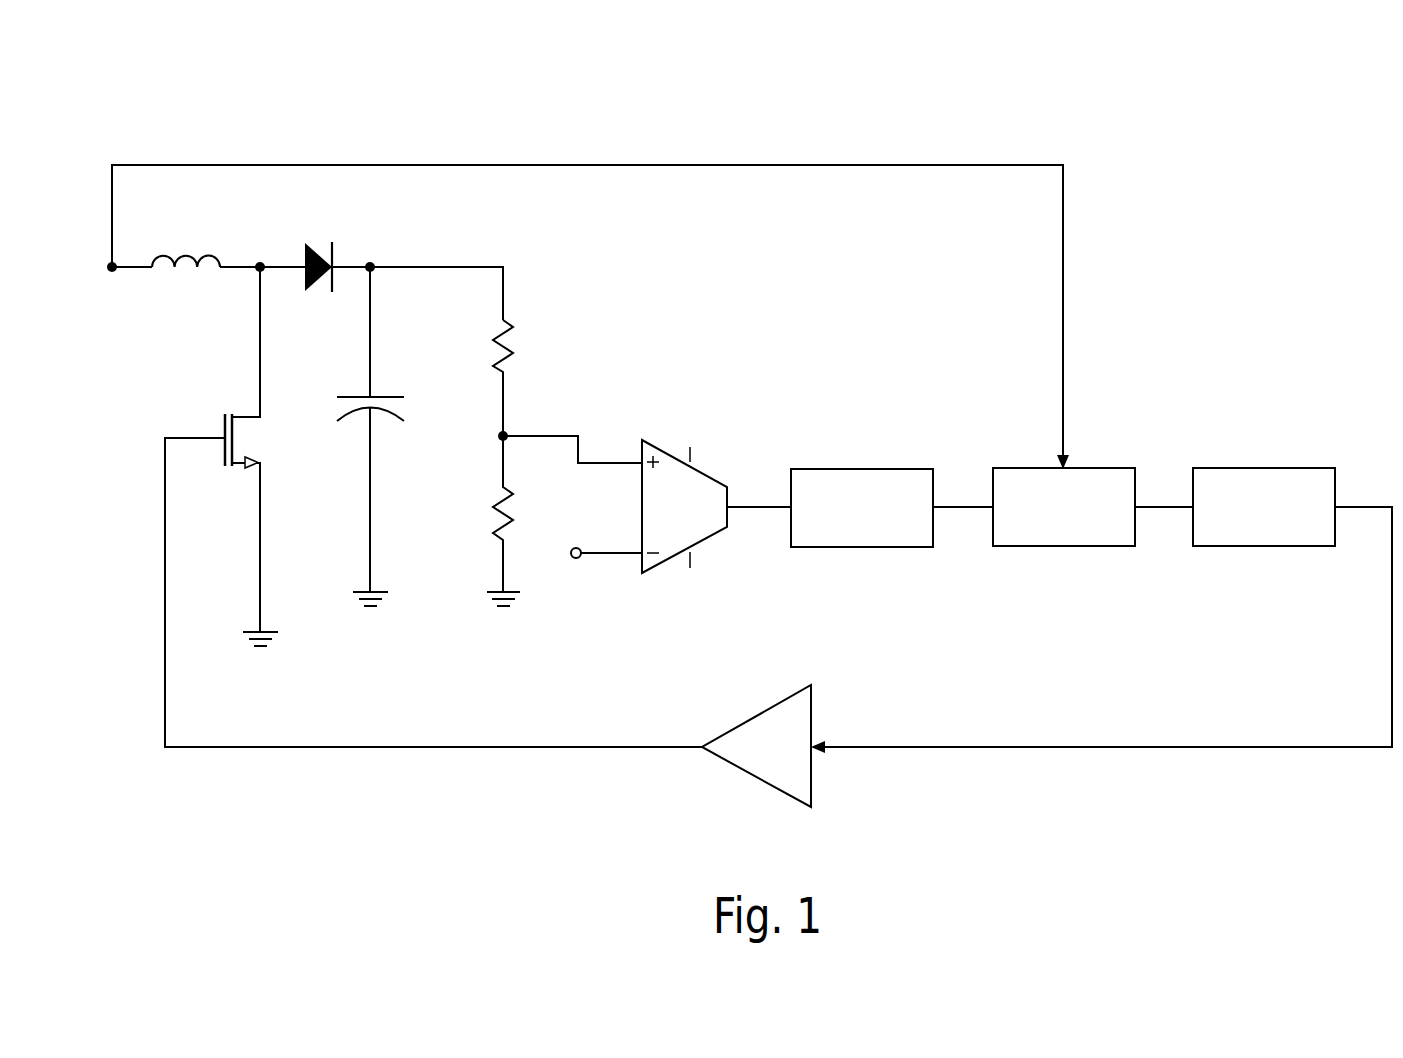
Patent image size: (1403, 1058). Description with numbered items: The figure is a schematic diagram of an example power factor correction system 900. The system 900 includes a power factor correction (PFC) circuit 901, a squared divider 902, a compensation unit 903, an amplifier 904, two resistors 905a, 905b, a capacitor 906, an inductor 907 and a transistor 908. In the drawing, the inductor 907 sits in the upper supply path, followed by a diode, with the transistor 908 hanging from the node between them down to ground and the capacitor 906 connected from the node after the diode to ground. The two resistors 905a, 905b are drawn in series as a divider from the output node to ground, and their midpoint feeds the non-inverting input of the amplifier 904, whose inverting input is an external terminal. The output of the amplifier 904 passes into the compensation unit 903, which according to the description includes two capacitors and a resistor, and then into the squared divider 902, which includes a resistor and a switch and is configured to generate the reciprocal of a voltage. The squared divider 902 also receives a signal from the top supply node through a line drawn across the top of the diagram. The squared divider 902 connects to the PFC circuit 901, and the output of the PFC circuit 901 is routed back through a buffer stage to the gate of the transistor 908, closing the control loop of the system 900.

The system 900 is at (128, 136).
The power factor correction (PFC) circuit 901 is at (1264, 529).
The squared divider 902 is at (1080, 529).
The compensation unit 903 is at (892, 552).
The amplifier 904 is at (647, 489).
The resistor 905a is at (517, 342).
The resistor 905b is at (520, 508).
The capacitor 906 is at (388, 415).
The inductor 907 is at (213, 255).
The transistor 908 is at (222, 430).